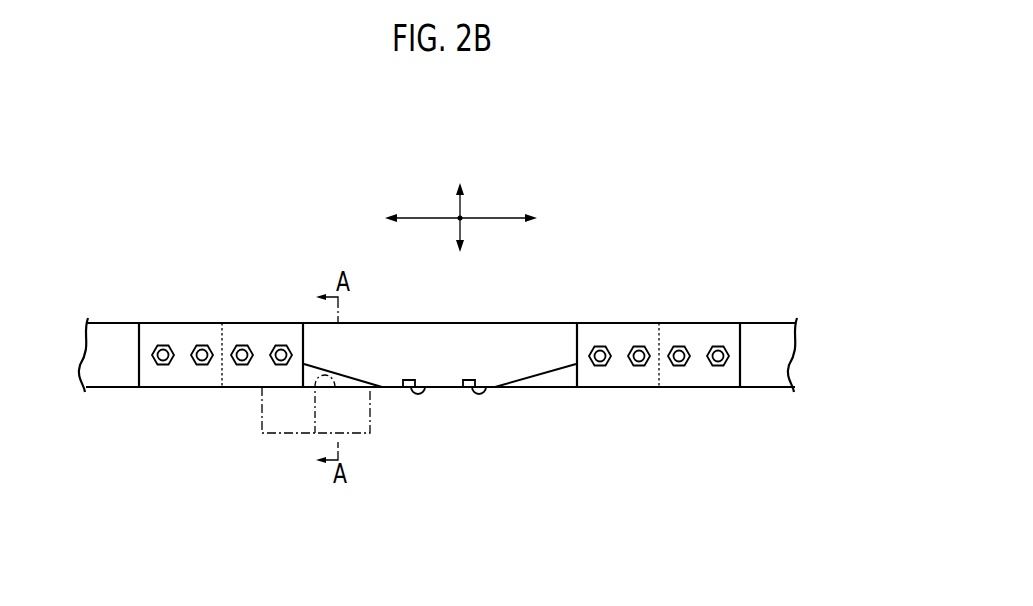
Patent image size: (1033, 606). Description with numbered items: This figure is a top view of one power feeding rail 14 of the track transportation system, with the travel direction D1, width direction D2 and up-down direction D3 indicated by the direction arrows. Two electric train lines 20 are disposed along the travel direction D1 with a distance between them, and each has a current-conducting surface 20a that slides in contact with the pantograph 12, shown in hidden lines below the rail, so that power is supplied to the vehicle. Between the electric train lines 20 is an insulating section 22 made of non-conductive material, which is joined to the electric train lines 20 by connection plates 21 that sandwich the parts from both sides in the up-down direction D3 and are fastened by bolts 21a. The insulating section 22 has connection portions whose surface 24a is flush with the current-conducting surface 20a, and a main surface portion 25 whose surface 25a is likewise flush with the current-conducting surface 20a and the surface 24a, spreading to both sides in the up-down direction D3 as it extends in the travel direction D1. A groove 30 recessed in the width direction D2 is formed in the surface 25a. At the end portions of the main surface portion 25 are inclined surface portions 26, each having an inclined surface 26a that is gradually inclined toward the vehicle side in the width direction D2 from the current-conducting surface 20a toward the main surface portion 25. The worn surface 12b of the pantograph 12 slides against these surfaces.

The pantograph 12 is at (273, 433).
The surface of the pantograph 12b is at (313, 433).
The power feeding rail 14 is at (693, 295).
The electric train line 20 is at (113, 343).
The current-conducting surface 20a is at (110, 388).
The connection plate 21 is at (182, 380).
The bolt 21a is at (163, 354).
The insulating section 22 is at (532, 402).
The surface of the connection portion 24a is at (250, 387).
The main surface portion 25 is at (464, 330).
The surface of the main surface portion 25a is at (447, 387).
The inclined surface portion 26 is at (370, 388).
The inclined surface 26a is at (350, 378).
The groove 30 is at (417, 378).
The travel direction D1 is at (424, 219).
The width direction D2 is at (463, 229).
The up-down direction D3 is at (468, 216).